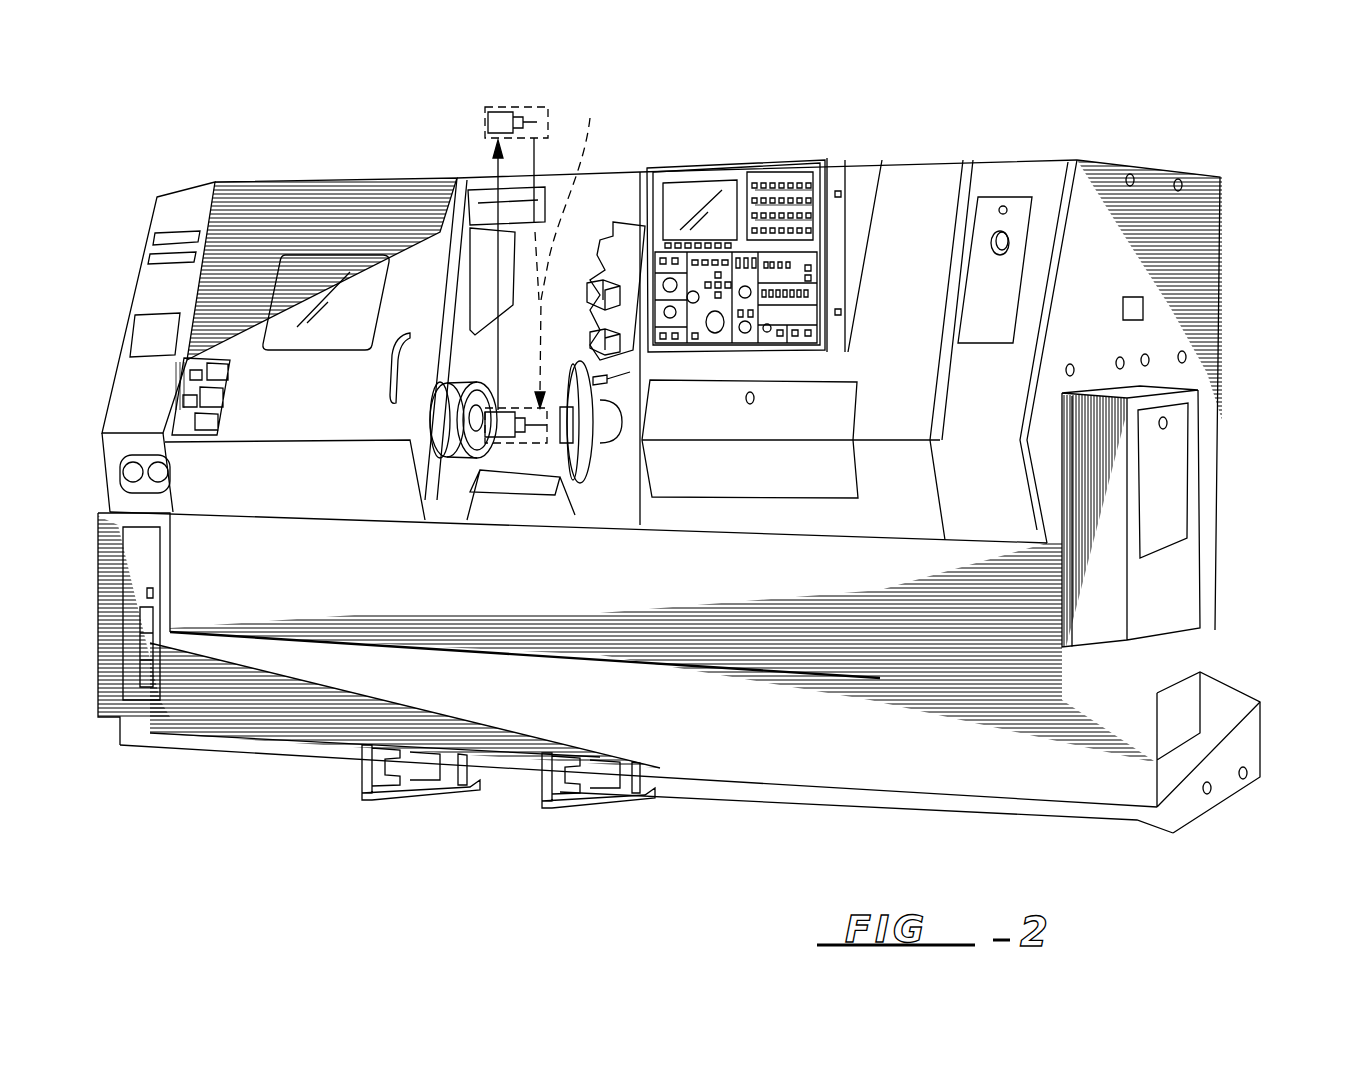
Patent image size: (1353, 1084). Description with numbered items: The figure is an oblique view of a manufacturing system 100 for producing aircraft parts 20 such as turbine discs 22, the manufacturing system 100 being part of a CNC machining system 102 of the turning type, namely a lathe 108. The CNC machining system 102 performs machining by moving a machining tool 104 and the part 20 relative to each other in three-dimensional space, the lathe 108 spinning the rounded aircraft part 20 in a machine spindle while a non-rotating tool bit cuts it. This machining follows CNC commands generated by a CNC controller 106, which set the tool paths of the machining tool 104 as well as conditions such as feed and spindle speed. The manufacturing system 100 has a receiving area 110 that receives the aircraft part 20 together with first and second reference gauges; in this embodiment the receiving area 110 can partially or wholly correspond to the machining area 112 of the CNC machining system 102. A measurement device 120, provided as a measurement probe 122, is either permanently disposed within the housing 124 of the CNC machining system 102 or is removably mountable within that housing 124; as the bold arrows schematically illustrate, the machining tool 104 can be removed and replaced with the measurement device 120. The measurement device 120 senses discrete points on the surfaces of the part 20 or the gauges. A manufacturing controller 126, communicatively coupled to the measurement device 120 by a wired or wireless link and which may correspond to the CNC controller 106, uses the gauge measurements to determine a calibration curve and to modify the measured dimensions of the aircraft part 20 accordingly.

The manufacturing system 100 is at (1065, 102).
The CNC machining system 102 is at (1155, 160).
The machining tool 104 is at (551, 253).
The CNC controller 106 is at (652, 167).
The lathe 108 is at (553, 365).
The receiving area 110 is at (488, 624).
The machining area 112 is at (511, 455).
The measurement device 120 is at (454, 114).
The measurement probe 122 is at (485, 118).
The housing 124 is at (1224, 262).
The manufacturing controller 126 is at (830, 160).
The aircraft part 20 is at (640, 617).
The turbine disc 22 is at (560, 515).